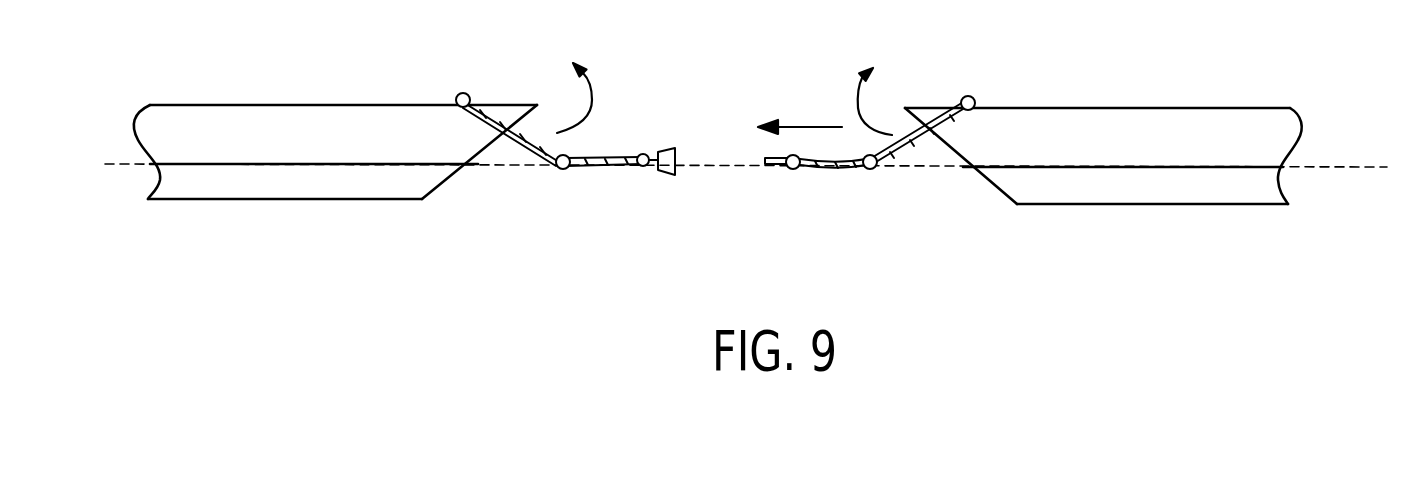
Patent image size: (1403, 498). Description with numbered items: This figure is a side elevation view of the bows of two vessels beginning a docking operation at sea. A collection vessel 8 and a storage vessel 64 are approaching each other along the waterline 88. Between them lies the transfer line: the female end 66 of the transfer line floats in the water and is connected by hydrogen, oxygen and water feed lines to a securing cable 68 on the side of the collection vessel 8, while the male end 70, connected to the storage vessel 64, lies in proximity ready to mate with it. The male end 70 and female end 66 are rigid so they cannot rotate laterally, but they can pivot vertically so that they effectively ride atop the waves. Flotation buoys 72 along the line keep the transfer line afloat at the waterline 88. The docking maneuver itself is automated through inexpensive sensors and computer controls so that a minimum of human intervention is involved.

The collection vessel 8 is at (284, 105).
The storage vessel 64 is at (1100, 108).
The female end 66 is at (670, 147).
The securing cable 68 is at (611, 167).
The male end 70 is at (772, 167).
The flotation buoys 72 is at (568, 157).
The waterline 88 is at (1338, 167).